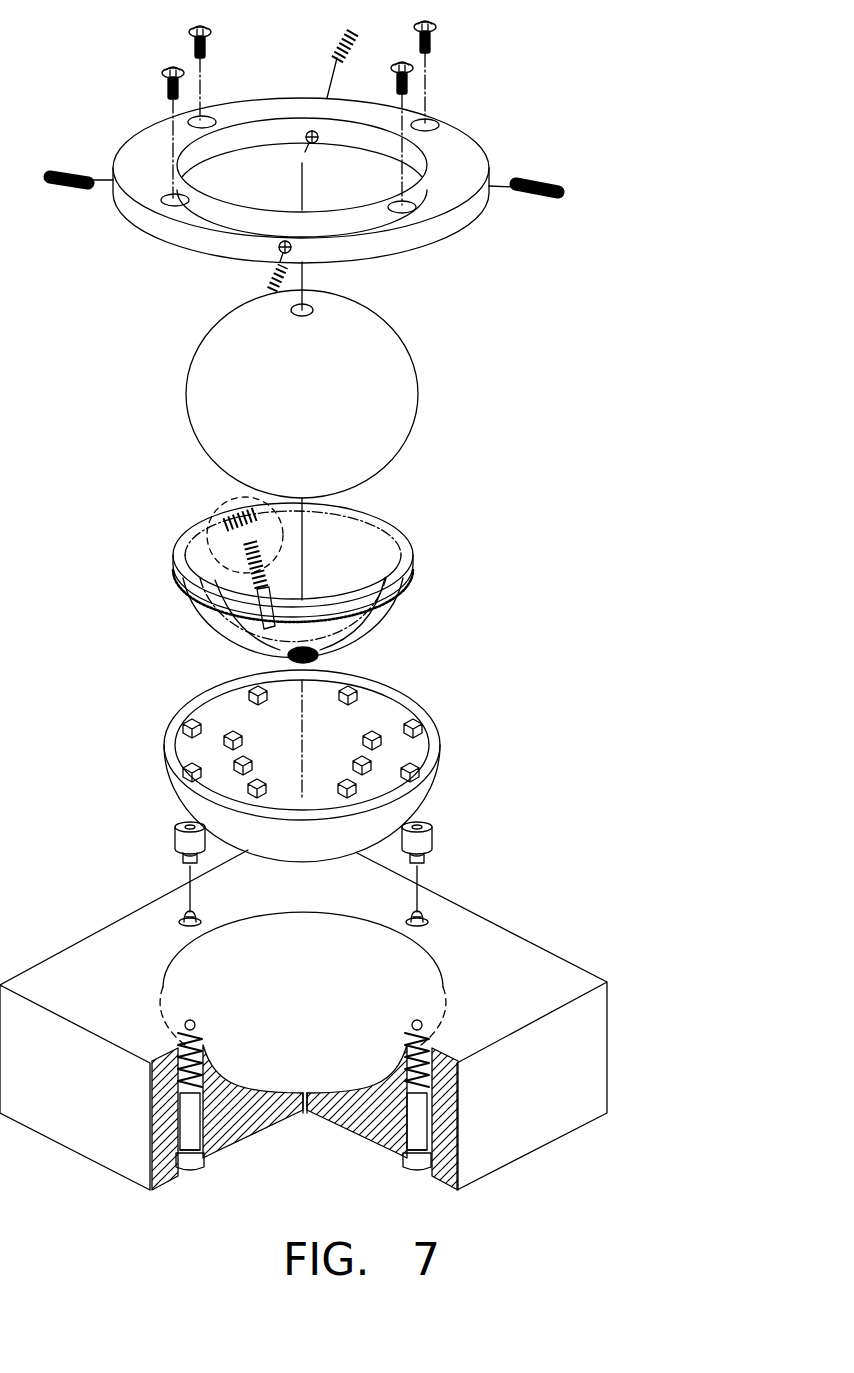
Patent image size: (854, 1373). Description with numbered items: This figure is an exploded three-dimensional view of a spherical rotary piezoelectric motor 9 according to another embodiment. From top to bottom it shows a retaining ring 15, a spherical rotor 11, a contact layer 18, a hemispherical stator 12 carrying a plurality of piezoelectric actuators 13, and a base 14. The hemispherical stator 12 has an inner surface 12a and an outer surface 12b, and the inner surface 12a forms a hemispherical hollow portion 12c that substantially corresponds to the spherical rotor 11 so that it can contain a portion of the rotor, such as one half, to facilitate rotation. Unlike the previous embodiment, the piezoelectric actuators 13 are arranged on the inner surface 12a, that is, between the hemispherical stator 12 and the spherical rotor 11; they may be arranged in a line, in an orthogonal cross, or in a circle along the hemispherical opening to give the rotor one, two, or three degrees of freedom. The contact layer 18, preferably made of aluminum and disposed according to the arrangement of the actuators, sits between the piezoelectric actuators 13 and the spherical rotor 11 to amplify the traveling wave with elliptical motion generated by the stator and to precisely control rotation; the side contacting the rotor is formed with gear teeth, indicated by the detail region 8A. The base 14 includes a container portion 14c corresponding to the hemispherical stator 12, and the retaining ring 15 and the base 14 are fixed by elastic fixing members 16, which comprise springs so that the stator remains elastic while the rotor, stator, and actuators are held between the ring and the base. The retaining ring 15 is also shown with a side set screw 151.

The spherical rotary piezoelectric motor 9 is at (672, 150).
The spherical rotor 11 is at (403, 396).
The hemispherical stator 12 is at (437, 748).
The inner surface 12a is at (380, 707).
The outer surface 12b is at (407, 803).
The hemispherical hollow portion 12c is at (313, 712).
The piezoelectric actuators 13 is at (231, 737).
The base 14 is at (548, 967).
The container portion 14c is at (388, 962).
The retaining ring 15 is at (458, 152).
The set screw 151 is at (558, 189).
The elastic fixing members 16 is at (418, 1168).
The contact layer 18 is at (392, 535).
The detail region 8A is at (226, 505).